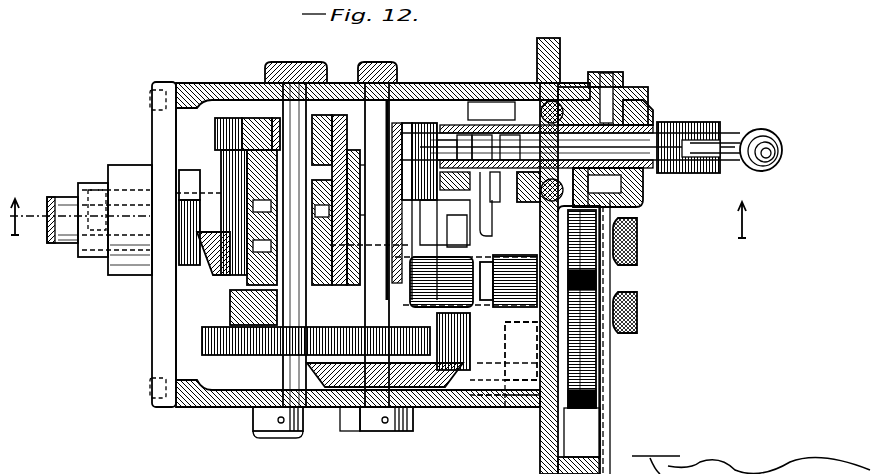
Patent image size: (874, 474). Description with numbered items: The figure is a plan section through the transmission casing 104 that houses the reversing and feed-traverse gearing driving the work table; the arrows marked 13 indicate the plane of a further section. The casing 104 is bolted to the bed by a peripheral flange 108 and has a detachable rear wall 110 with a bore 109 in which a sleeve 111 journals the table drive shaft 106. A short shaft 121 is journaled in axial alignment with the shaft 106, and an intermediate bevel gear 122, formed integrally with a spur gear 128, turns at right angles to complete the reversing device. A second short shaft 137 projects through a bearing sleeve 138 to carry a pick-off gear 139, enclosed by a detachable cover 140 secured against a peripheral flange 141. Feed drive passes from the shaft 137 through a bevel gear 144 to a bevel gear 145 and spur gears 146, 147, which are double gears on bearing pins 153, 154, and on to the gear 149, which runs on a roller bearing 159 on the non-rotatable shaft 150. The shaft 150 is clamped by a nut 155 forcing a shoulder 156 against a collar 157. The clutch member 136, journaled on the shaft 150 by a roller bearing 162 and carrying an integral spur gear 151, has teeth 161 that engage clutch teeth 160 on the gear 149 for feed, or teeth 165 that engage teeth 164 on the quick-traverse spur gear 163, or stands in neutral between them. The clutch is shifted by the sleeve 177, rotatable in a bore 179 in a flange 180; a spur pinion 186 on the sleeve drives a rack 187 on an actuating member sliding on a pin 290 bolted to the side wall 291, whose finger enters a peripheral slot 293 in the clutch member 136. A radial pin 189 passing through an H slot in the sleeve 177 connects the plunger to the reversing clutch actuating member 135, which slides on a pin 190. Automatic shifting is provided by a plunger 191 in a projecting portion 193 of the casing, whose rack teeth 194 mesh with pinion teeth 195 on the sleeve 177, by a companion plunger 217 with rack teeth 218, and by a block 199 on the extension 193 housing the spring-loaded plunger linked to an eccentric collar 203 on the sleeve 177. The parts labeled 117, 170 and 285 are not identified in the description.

The transmission casing 104 is at (213, 420).
The table drive shaft 106 is at (66, 245).
The peripheral flange 108 is at (540, 51).
The bore 109 is at (127, 183).
The detachable rear wall 110 is at (170, 127).
The sleeve 111 is at (113, 190).
The bevel gear cone 117 is at (215, 290).
The short shaft 121 is at (620, 262).
The intermediate bevel gear 122 is at (226, 162).
The spur gear 128 is at (222, 100).
The section line 13 is at (384, 226).
The reversing clutch actuating member 135 is at (478, 265).
The clutch member 136 is at (210, 280).
The second short shaft 137 is at (511, 406).
The bearing sleeve 138 is at (486, 410).
The second pick-off gear 139 is at (598, 388).
The detachable cover 140 is at (612, 426).
The peripheral flange 141 is at (576, 462).
The bevel gear 144 is at (452, 409).
The bevel gear 145 is at (405, 328).
The spur gear 146 is at (358, 433).
The spur gear 147 is at (338, 409).
The gear 149 is at (233, 312).
The non-rotatable shaft 150 is at (297, 433).
The spur gear 151 is at (166, 266).
The bearing pin 153 is at (396, 433).
The bearing pin 154 is at (272, 439).
The nut 155 is at (298, 60).
The shoulder 156 is at (300, 83).
The collar 157 is at (386, 100).
The roller bearing 159 is at (228, 325).
The clutch teeth 160 is at (425, 247).
The teeth 161 is at (357, 247).
The roller bearing 162 is at (228, 207).
The spur gear 163 is at (251, 83).
The teeth 164 is at (346, 192).
The teeth 165 is at (420, 222).
The cylinder 170 is at (372, 286).
The sleeve 177 is at (540, 83).
The bore 179 is at (462, 100).
The flange 180 is at (490, 100).
The spur pinion 186 is at (488, 83).
The rack 187 is at (346, 160).
The pin 189 is at (452, 100).
The pin 190 is at (483, 307).
The plunger 191 is at (736, 222).
The projecting portion 193 is at (575, 72).
The rack teeth 194 is at (650, 200).
The pinion teeth 195 is at (604, 74).
The block 199 is at (645, 100).
The collar 203 is at (642, 178).
The companion plunger 217 is at (536, 77).
The rack teeth 218 is at (546, 135).
The sleeve 285 is at (402, 211).
The pin 290 is at (405, 100).
The side wall 291 is at (447, 83).
The peripheral slot 293 is at (374, 223).